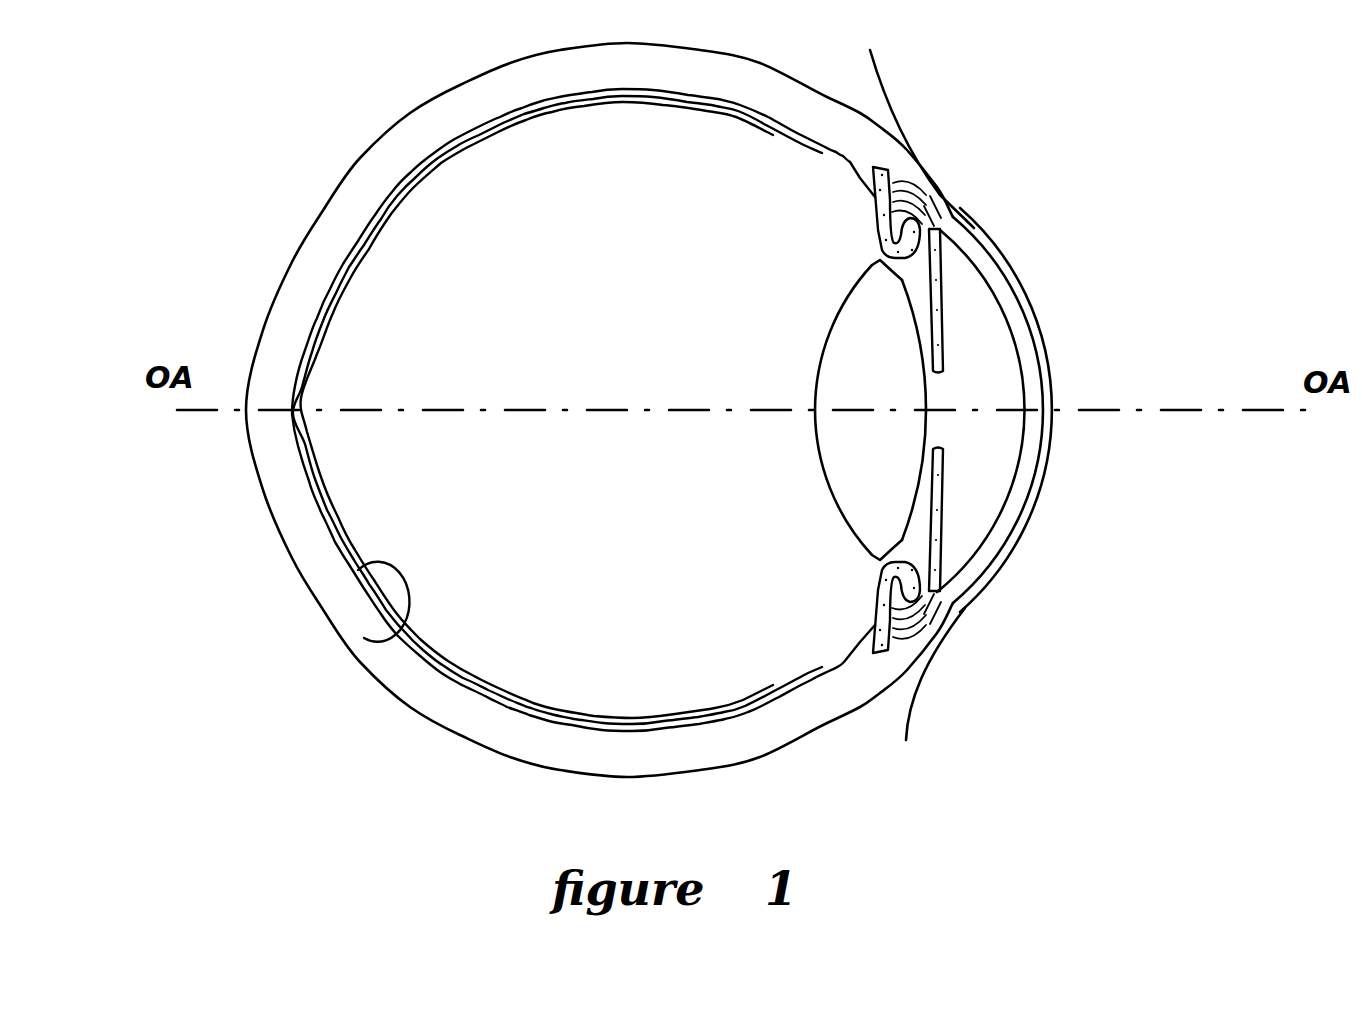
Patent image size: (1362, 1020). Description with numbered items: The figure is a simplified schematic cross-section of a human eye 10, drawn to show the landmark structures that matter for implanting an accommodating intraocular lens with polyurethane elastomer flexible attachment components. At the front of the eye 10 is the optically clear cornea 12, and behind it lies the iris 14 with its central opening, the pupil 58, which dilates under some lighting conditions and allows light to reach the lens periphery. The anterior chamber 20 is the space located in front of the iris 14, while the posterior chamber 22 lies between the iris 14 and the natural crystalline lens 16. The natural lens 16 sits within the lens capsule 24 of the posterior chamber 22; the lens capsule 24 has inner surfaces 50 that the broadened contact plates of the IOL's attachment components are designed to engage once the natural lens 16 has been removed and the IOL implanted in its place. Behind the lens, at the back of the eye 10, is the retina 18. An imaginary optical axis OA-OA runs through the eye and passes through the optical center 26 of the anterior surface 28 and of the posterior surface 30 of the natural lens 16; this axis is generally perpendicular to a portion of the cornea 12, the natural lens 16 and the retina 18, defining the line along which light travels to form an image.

The eye 10 is at (1173, 213).
The cornea 12 is at (1045, 362).
The iris 14 is at (945, 530).
The natural crystalline lens 16 is at (866, 305).
The retina 18 is at (375, 640).
The anterior chamber 20 is at (980, 480).
The posterior chamber 22 is at (935, 490).
The lens capsule 24 is at (742, 412).
The optical center 26 is at (815, 410).
The anterior surface 28 is at (933, 430).
The posterior surface 30 is at (848, 480).
The inner surfaces 50 is at (935, 262).
The pupil 58 is at (930, 381).